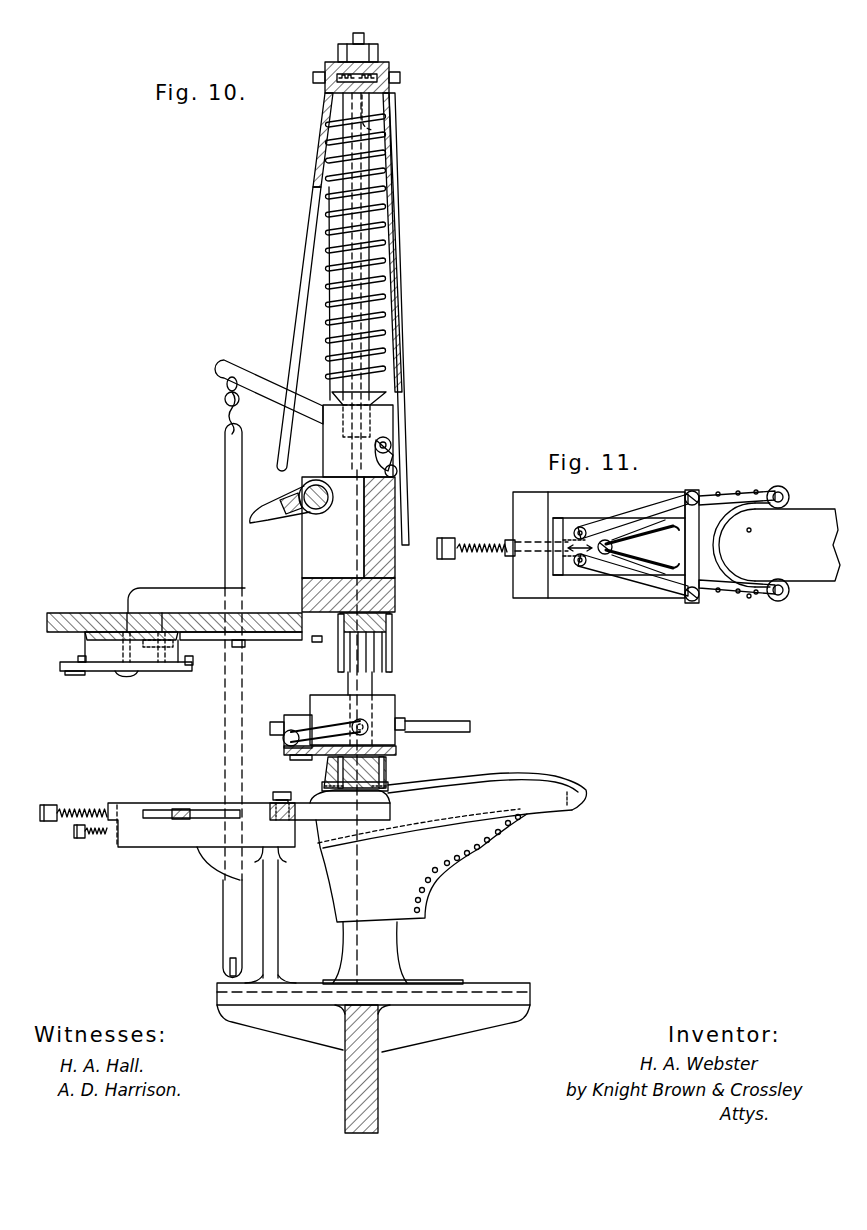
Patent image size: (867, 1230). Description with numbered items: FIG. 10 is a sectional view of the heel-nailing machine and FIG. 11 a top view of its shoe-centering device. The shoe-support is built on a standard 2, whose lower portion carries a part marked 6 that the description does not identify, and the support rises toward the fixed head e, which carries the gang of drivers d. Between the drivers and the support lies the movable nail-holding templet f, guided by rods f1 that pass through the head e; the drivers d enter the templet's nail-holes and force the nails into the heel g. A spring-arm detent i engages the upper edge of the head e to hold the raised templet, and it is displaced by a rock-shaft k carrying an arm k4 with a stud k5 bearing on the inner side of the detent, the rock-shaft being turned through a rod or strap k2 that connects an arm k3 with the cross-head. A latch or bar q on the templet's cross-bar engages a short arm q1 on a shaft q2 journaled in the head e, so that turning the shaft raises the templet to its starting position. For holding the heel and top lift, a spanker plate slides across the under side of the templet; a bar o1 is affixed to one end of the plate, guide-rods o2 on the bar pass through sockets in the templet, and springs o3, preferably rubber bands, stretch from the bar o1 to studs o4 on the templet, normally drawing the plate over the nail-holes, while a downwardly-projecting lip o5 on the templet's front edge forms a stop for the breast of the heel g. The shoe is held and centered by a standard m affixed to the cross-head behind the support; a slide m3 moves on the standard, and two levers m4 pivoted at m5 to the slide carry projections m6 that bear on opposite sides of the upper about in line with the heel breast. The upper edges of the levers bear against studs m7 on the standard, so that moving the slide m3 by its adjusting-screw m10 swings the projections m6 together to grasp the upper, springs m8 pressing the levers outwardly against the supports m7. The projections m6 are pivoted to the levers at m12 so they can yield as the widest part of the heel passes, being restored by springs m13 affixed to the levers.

In FIG. 10, the spring-arm detent i is at (399, 305).
In FIG. 10, the latch or bar q is at (302, 258).
In FIG. 10, the guide-rods f1 is at (390, 222).
In FIG. 10, the rock-shaft k is at (393, 442).
In FIG. 10, the arm k4 is at (395, 458).
In FIG. 10, the stud k5 is at (398, 473).
In FIG. 10, the head e is at (384, 580).
In FIG. 10, the shaft q2 is at (317, 516).
In FIG. 10, the short arm q1 is at (270, 508).
In FIG. 10, the arm k3 is at (268, 385).
In FIG. 10, the rod or strap k2 is at (234, 562).
In FIG. 10, the drivers d is at (382, 652).
In FIG. 10, the nail-holding templet f is at (318, 722).
In FIG. 10, the springs o3 is at (340, 727).
In FIG. 10, the bar o1 is at (293, 726).
In FIG. 10, the studs o4 is at (368, 726).
In FIG. 10, the guide-rods o2 is at (283, 737).
In FIG. 10, the lip o5 is at (397, 751).
In FIG. 10, the heel g is at (372, 776).
In FIG. 10, the projections m6 is at (392, 800).
In FIG. 11, the projections m6 is at (776, 486).
In FIG. 10, the levers m4 is at (353, 806).
In FIG. 11, the levers m4 is at (710, 496).
In FIG. 10, the standard m is at (310, 824).
In FIG. 10, the standard 2 is at (451, 878).
In FIG. 10, the shaft 6 is at (367, 1055).
In FIG. 11, the slide m3 is at (568, 568).
In FIG. 11, the adjusting-screw m10 is at (514, 538).
In FIG. 11, the pivots m5 is at (640, 628).
In FIG. 11, the springs m8 is at (637, 573).
In FIG. 11, the studs or supports m7 is at (690, 652).
In FIG. 11, the pivotal connection m12 is at (748, 602).
In FIG. 11, the springs m13 is at (746, 604).